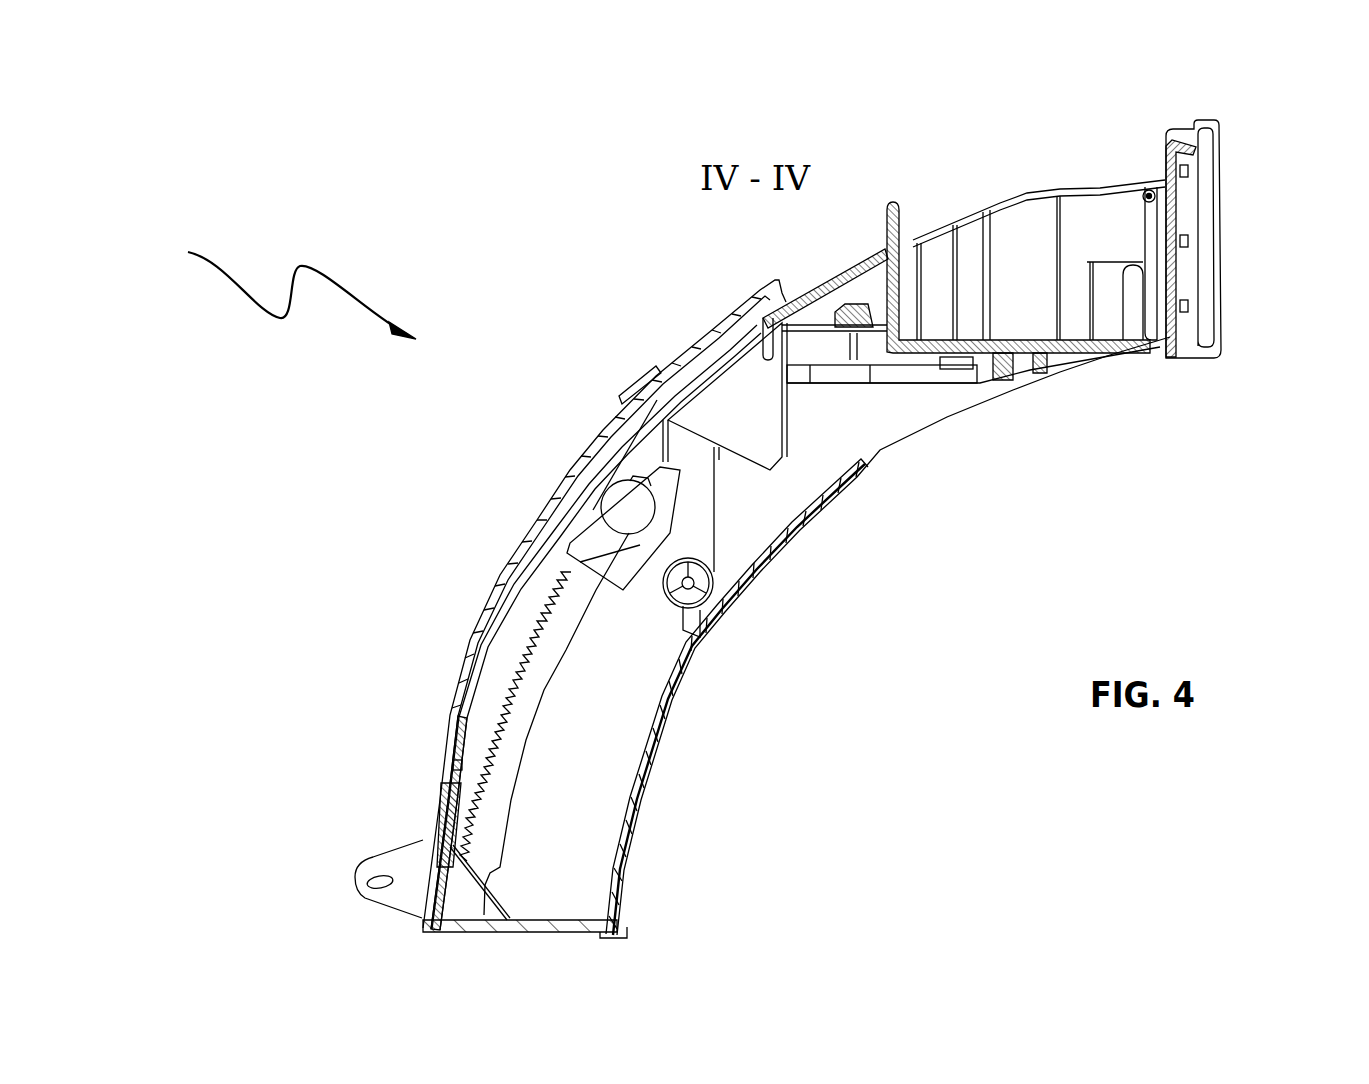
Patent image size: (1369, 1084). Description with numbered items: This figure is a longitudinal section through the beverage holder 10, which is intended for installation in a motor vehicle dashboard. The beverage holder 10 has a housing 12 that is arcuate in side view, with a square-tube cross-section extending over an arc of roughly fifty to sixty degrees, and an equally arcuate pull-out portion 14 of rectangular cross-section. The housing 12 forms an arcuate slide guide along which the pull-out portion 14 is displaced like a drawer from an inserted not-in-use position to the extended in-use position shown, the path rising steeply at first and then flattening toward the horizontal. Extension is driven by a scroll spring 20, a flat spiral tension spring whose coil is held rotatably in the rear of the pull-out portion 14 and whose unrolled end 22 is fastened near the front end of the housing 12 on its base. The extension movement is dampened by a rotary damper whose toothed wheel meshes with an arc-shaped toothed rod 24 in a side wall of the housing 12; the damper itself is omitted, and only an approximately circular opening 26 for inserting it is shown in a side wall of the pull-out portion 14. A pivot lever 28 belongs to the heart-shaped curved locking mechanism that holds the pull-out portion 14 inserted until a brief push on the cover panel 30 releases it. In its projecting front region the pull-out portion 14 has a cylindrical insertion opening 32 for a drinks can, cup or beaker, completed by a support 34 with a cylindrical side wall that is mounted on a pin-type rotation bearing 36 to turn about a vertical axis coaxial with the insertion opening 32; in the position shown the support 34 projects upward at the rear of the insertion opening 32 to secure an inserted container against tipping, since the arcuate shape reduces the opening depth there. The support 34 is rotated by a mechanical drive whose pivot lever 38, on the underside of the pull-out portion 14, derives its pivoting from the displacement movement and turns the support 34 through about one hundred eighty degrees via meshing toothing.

The beverage holder 10 is at (283, 288).
The housing 12 is at (605, 805).
The pull-out portion 14 is at (873, 420).
The scroll spring 20 is at (720, 613).
The unrolled end 22 is at (817, 507).
The toothed rod 24 is at (512, 680).
The opening 26 is at (590, 520).
The pivot lever 28 is at (440, 828).
The cover panel 30 is at (1200, 242).
The insertion opening 32 is at (1045, 215).
The support 34 is at (903, 222).
The rotation bearing 36 is at (1047, 372).
The pivot lever 38 is at (912, 375).